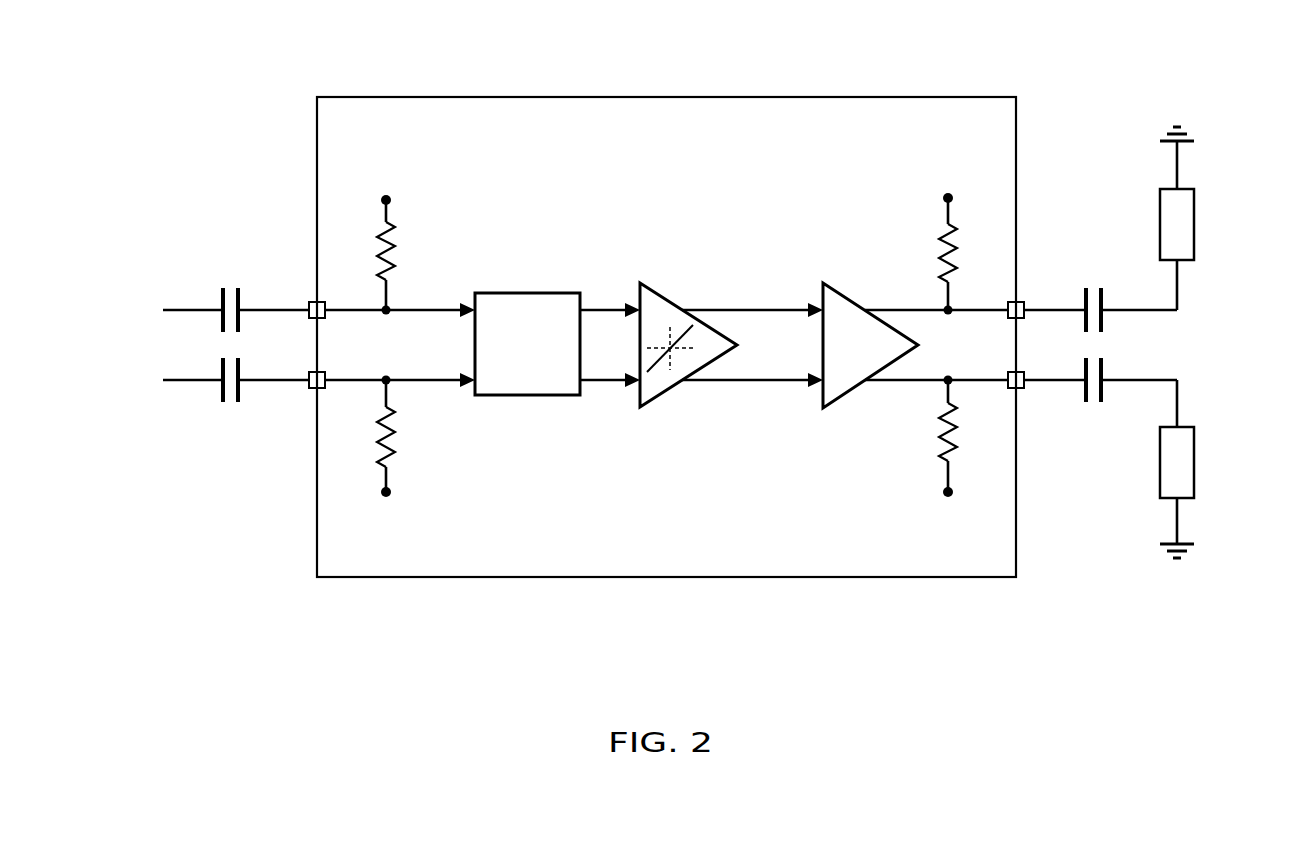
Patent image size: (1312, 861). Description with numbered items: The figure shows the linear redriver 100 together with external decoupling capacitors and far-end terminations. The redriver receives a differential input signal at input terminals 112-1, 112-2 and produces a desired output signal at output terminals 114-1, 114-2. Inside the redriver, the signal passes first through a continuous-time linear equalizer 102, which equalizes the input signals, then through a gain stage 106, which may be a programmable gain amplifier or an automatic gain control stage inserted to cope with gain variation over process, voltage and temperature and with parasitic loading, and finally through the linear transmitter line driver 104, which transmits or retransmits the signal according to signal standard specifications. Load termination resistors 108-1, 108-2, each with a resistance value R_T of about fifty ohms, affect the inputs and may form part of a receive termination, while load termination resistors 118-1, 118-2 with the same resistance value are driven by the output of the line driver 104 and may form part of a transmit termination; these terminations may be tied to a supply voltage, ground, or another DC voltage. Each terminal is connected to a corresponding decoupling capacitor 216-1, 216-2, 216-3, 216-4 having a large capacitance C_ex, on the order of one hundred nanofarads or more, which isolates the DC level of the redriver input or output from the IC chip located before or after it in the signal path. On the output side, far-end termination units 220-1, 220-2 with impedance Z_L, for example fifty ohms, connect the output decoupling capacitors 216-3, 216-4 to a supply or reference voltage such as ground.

The linear redriver 100 is at (760, 97).
The continuous-time linear equalizer 102 is at (532, 292).
The linear transmitter driver 104 is at (850, 298).
The gain stage 106 is at (660, 292).
The load termination resistor 108-1 is at (397, 250).
The load termination resistor 108-2 is at (395, 430).
The input terminal 112-1 is at (310, 300).
The input terminal 112-2 is at (310, 390).
The output terminal 114-1 is at (1025, 303).
The output terminal 114-2 is at (1025, 386).
The load termination resistor 118-1 is at (938, 258).
The load termination resistor 118-2 is at (938, 438).
The decoupling capacitor 216-1 is at (222, 323).
The decoupling capacitor 216-2 is at (222, 373).
The decoupling capacitor 216-3 is at (1103, 325).
The decoupling capacitor 216-4 is at (1103, 366).
The far-end termination unit 220-1 is at (1194, 198).
The far-end termination unit 220-2 is at (1194, 488).